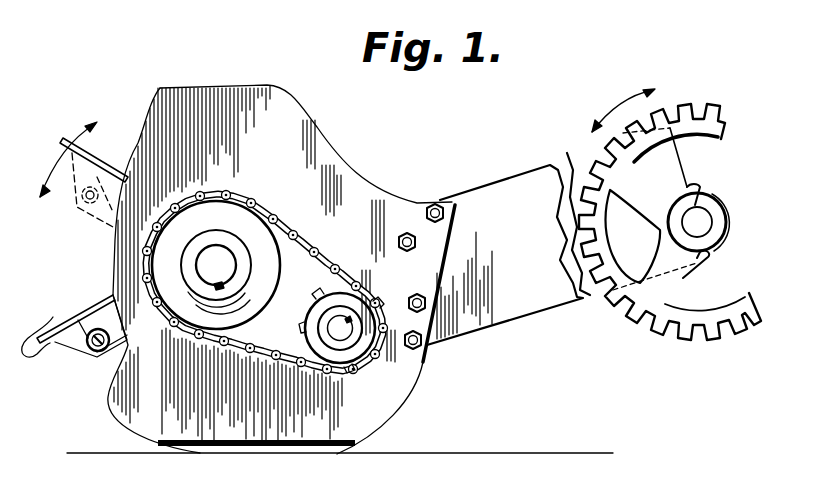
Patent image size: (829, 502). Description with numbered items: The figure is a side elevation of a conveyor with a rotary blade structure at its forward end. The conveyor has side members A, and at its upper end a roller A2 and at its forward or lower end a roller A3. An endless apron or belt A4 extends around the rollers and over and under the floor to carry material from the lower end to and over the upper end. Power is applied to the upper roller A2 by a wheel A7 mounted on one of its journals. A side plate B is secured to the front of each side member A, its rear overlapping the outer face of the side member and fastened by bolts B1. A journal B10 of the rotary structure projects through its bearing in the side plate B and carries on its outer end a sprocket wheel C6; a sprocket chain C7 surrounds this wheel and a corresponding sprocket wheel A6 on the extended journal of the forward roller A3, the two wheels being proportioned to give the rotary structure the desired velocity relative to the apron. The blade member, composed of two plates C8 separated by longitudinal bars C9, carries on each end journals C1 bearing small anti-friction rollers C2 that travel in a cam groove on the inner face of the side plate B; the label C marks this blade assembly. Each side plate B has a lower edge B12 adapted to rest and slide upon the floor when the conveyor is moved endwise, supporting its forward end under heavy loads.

The side member A is at (510, 310).
The roller A2 is at (700, 208).
The roller A3 is at (338, 316).
The endless apron A4 is at (724, 213).
The sprocket wheel A6 is at (357, 353).
The wheel A7 is at (668, 330).
The side plate B is at (270, 87).
The bolts B1 is at (417, 298).
The journal B10 is at (213, 243).
The lower edge B12 is at (228, 455).
The bracket bar C is at (76, 309).
The journal C1 is at (99, 347).
The anti-friction roller C2 is at (87, 347).
The sprocket wheel C6 is at (165, 222).
The sprocket chain C7 is at (295, 228).
The plates C8 is at (53, 317).
The longitudinal bars C9 is at (100, 317).